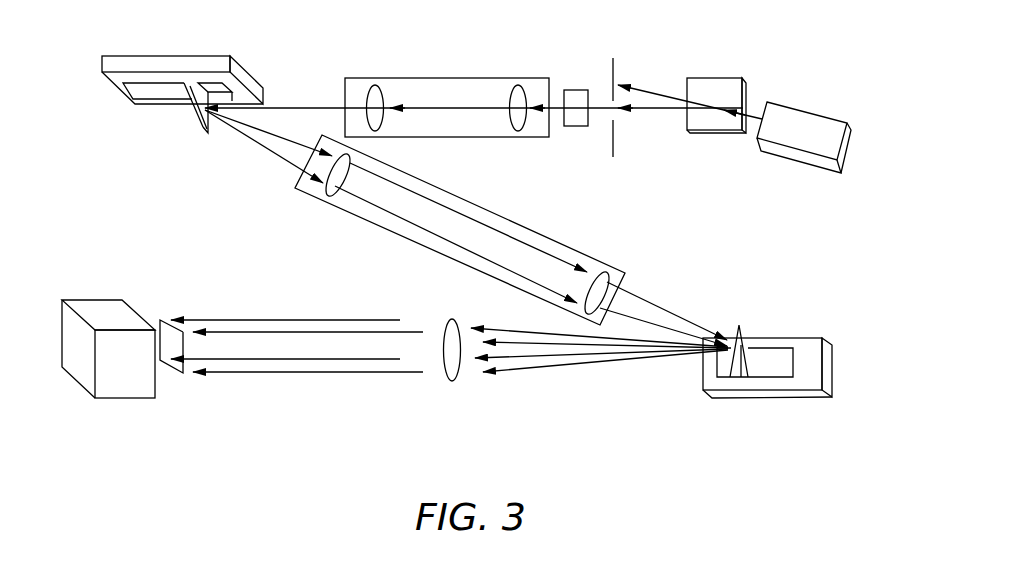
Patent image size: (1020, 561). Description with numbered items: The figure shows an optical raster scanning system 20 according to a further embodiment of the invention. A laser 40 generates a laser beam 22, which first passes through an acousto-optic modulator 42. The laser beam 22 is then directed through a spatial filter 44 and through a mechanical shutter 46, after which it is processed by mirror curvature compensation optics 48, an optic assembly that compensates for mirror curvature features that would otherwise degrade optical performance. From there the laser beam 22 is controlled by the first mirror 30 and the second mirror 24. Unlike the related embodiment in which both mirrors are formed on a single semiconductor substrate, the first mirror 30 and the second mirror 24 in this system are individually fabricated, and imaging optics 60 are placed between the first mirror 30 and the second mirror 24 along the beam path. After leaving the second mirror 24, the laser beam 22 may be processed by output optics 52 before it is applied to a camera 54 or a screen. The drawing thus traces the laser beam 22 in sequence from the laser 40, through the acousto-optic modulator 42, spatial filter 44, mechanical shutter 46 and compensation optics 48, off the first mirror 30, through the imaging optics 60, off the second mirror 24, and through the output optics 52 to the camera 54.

The optical raster scanning system 20 is at (161, 222).
The laser beam 22 is at (713, 86).
The second mirror 24 is at (767, 347).
The first mirror 30 is at (182, 122).
The laser 40 is at (816, 132).
The acousto-optic modulator 42 is at (705, 126).
The spatial filter 44 is at (645, 94).
The mechanical shutter 46 is at (560, 135).
The mirror curvature compensation optics 48 is at (435, 85).
The output optics 52 is at (429, 370).
The camera 54 is at (116, 370).
The imaging optics 60 is at (457, 230).